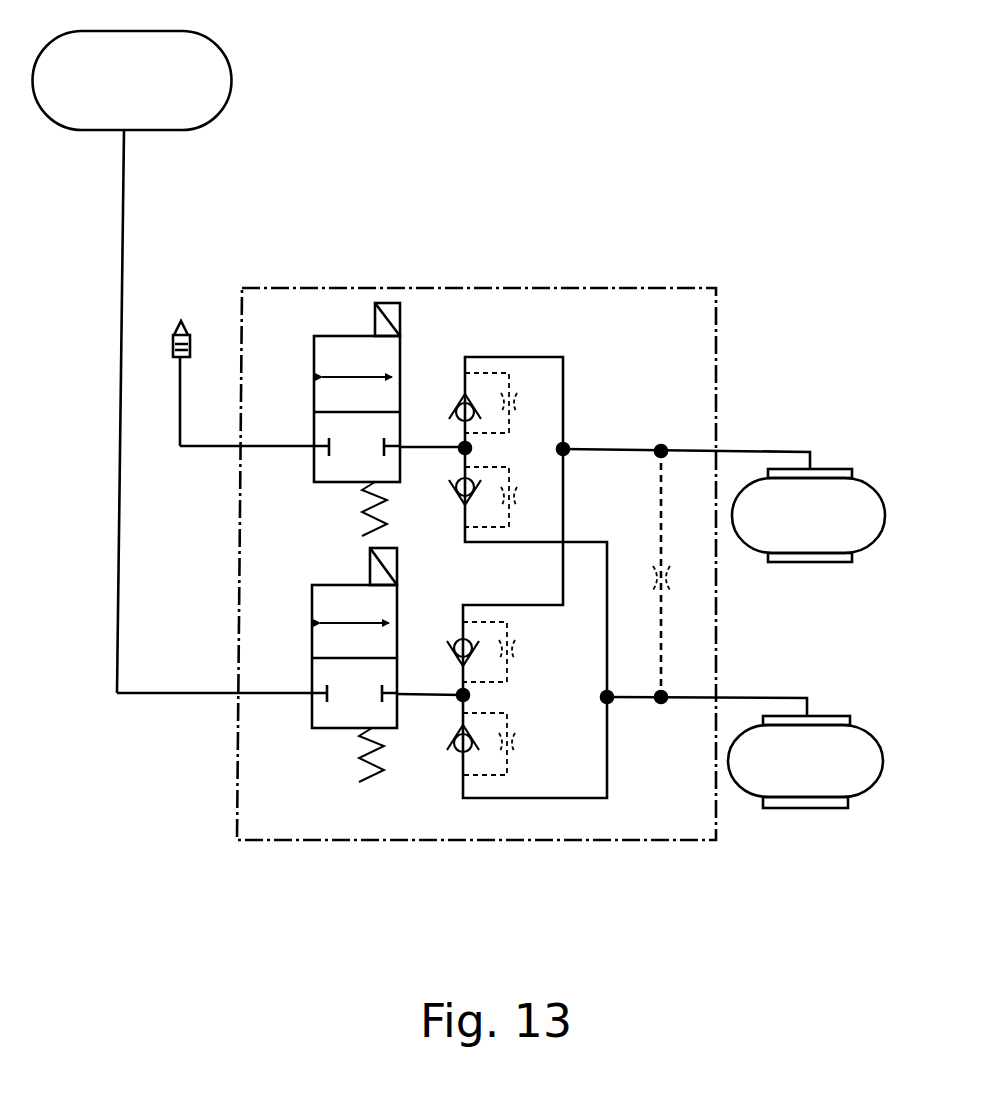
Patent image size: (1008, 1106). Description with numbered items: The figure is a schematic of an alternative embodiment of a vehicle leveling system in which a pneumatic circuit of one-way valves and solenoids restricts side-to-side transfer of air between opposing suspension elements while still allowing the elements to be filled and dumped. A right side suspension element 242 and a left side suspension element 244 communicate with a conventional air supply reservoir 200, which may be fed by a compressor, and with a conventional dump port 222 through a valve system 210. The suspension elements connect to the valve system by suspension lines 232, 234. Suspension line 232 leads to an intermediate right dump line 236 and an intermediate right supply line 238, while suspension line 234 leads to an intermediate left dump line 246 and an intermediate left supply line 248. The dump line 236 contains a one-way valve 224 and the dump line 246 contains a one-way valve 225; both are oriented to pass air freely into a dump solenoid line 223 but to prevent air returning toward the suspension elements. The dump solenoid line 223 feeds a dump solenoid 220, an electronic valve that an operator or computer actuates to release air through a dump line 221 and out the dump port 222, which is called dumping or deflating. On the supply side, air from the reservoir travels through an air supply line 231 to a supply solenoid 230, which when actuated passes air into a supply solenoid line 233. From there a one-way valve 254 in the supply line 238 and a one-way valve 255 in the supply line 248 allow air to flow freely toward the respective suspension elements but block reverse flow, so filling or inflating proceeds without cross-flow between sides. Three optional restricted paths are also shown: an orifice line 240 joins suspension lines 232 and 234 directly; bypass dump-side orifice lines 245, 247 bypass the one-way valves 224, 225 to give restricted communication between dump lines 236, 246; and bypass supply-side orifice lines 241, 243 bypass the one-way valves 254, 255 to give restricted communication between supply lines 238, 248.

The air supply reservoir 200 is at (232, 79).
The valve system 210 is at (716, 316).
The dump solenoid 220 is at (314, 368).
The dump line 221 is at (203, 445).
The dump port 222 is at (185, 320).
The dump solenoid line 223 is at (422, 448).
The one-way valve 224 is at (455, 408).
The one-way valve 225 is at (455, 492).
The supply solenoid 230 is at (310, 628).
The air supply line 231 is at (183, 691).
The suspension line 232 is at (753, 452).
The supply solenoid line 233 is at (430, 697).
The suspension line 234 is at (753, 698).
The intermediate right dump line 236 is at (564, 393).
The intermediate right supply line 238 is at (563, 573).
The orifice line 240 is at (673, 553).
The bypass supply-side orifice line 241 is at (510, 650).
The right side suspension element 242 is at (753, 548).
The bypass supply-side orifice line 243 is at (512, 747).
The left side suspension element 244 is at (747, 797).
The bypass dump-side orifice line 245 is at (513, 402).
The intermediate left dump line 246 is at (607, 652).
The bypass dump-side orifice line 247 is at (514, 498).
The intermediate left supply line 248 is at (607, 772).
The one-way valve 254 is at (454, 654).
The one-way valve 255 is at (452, 735).